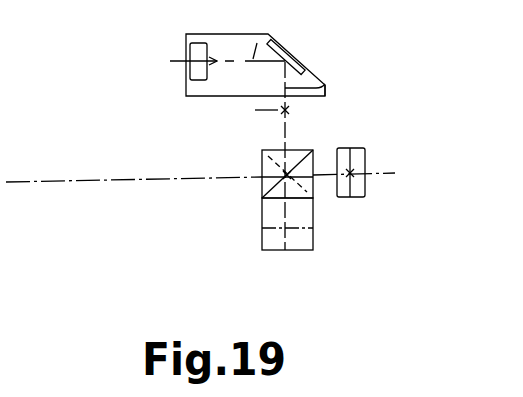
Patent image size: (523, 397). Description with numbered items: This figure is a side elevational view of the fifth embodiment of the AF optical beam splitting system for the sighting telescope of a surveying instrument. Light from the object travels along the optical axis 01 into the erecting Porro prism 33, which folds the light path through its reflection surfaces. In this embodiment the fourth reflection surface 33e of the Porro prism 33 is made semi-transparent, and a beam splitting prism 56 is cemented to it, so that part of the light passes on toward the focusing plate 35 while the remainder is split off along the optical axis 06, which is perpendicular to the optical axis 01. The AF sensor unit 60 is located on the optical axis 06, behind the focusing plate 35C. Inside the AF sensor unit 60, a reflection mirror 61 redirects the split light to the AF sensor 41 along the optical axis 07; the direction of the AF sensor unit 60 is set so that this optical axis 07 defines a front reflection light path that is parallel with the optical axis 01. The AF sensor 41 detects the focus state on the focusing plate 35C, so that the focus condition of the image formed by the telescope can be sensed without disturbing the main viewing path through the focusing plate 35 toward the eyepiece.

The optical axis 01 is at (90, 181).
The AF sensor unit 60 is at (184, 33).
The AF sensor 41 is at (189, 74).
The optical axis 07 is at (262, 33).
The reflection mirror 61 is at (293, 53).
The optical axis 06 is at (328, 73).
The focusing plate 35C is at (293, 110).
The Porro prism 33 is at (305, 254).
The fourth reflection surface 33e is at (297, 163).
The beam splitting prism 56 is at (263, 168).
The focusing plate 35 is at (355, 197).